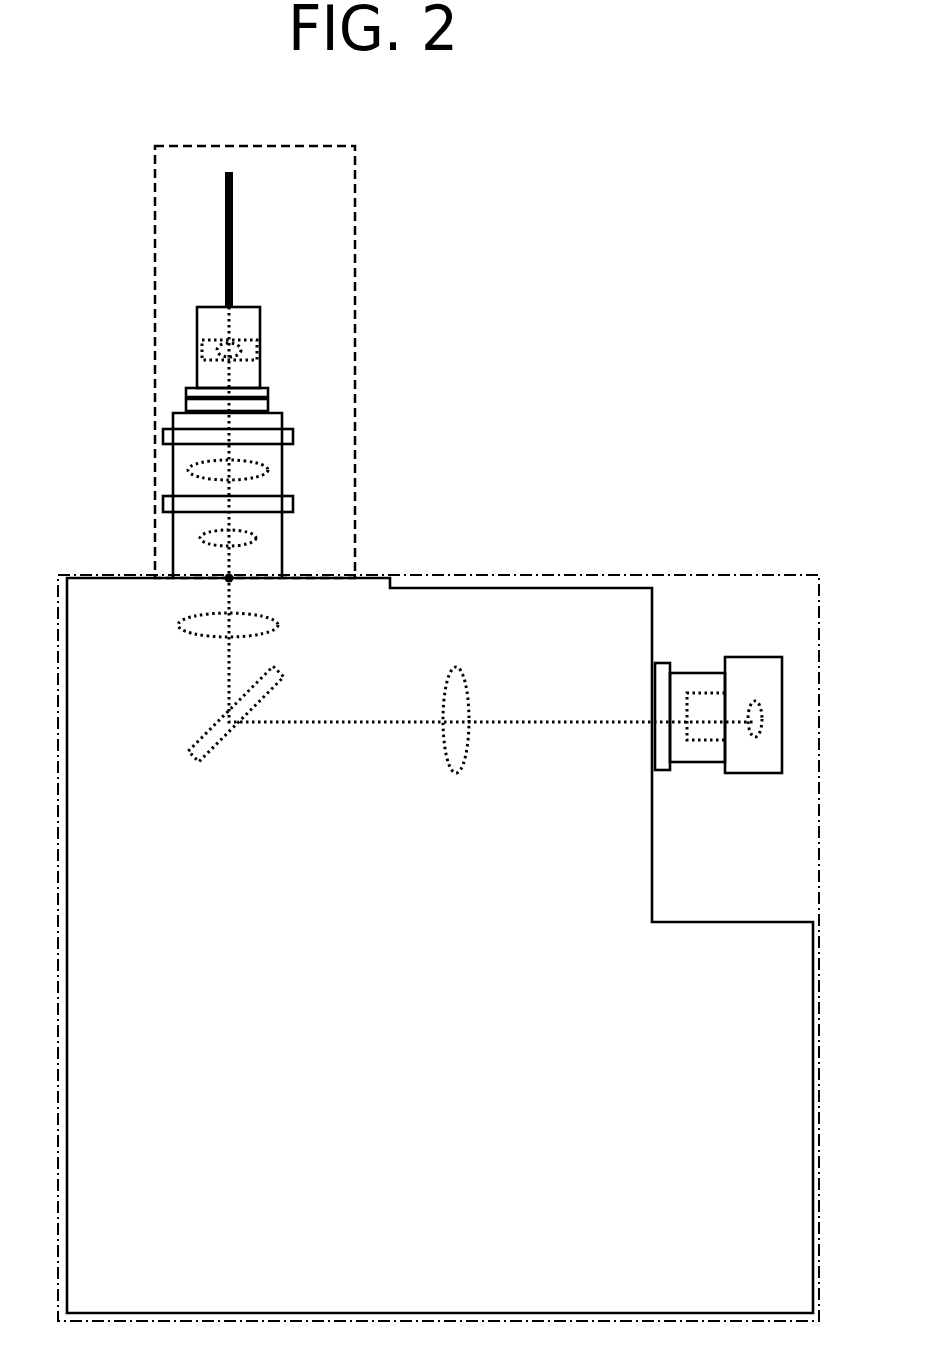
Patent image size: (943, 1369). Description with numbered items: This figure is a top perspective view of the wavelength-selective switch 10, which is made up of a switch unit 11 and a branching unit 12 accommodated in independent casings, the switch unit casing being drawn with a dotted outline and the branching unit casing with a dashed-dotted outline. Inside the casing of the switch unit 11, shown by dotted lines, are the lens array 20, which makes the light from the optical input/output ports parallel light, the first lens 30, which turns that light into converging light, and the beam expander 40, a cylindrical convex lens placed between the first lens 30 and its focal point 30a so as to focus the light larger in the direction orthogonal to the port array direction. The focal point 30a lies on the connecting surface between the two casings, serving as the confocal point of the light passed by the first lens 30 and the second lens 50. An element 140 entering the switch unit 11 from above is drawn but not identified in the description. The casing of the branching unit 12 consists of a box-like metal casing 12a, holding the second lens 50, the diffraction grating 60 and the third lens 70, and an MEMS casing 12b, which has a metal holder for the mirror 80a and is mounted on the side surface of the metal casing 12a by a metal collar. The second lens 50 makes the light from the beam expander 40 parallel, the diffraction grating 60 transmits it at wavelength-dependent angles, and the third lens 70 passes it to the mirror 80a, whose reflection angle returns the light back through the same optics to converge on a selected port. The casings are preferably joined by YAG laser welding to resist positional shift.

The wavelength-selective switch 10 is at (778, 144).
The switch unit 11 is at (155, 150).
The branching unit 12 is at (58, 786).
The metal casing 12a is at (66, 741).
The MEMS casing 12b is at (713, 672).
The optical fiber 140 is at (230, 250).
The lens array 20 is at (257, 330).
The first lens 30 is at (268, 466).
The focal point 30a is at (233, 577).
The beam expander 40 is at (255, 533).
The second lens 50 is at (278, 627).
The diffraction grating 60 is at (188, 752).
The third lens 70 is at (456, 773).
The mirror 80a is at (755, 737).